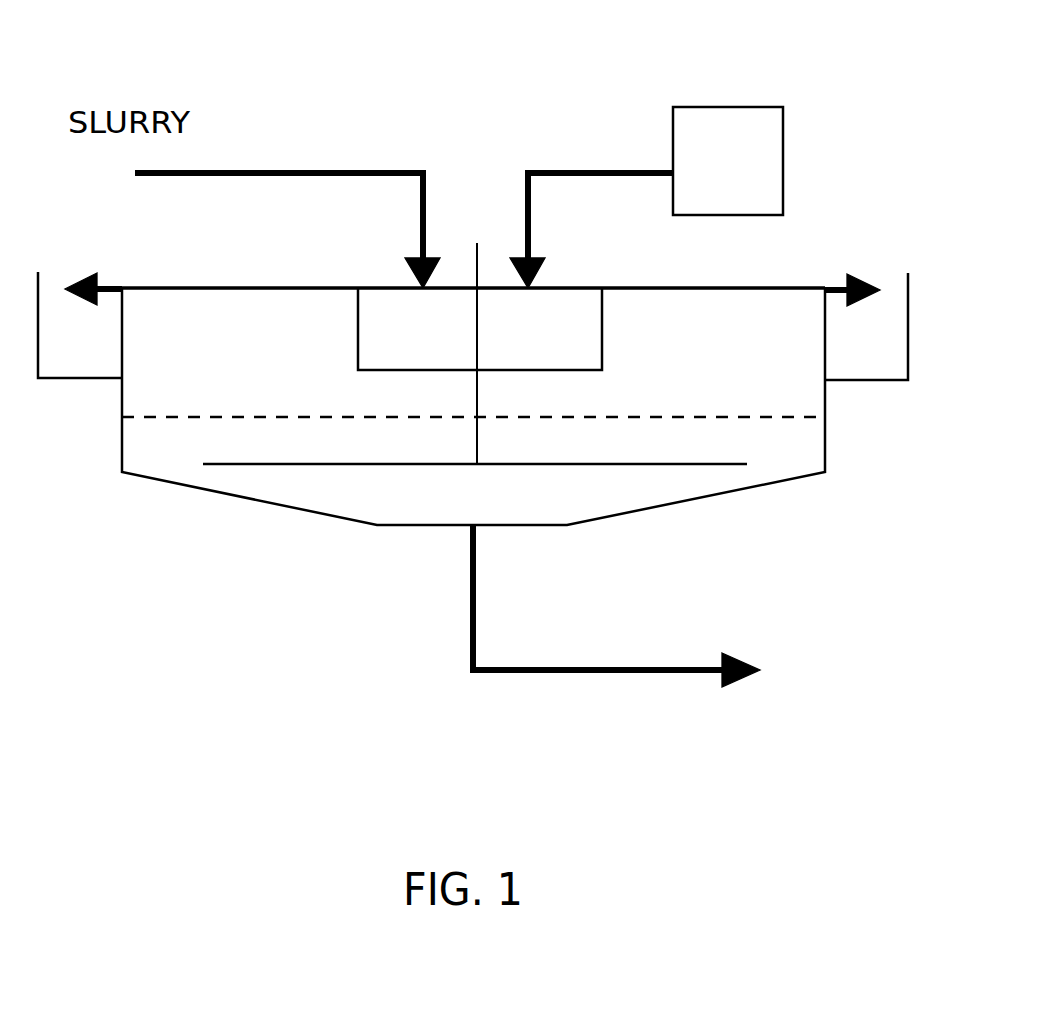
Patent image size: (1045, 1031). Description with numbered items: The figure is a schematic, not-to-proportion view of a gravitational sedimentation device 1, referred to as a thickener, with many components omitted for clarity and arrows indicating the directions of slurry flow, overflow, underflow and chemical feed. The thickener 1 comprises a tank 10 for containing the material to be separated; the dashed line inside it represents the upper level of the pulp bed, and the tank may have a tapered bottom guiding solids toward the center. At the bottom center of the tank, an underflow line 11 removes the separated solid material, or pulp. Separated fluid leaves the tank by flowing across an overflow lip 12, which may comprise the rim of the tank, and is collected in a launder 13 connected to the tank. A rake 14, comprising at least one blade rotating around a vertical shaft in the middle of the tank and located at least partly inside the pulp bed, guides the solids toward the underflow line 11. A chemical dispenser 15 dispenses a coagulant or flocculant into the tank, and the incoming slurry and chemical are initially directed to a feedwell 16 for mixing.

The gravitational sedimentation device 1 is at (218, 565).
The tank 10 is at (757, 482).
The underflow line 11 is at (470, 593).
The overflow lip 12 is at (123, 293).
The launder 13 is at (72, 378).
The rake 14 is at (657, 463).
The chemical dispenser 15 is at (727, 107).
The feedwell 16 is at (358, 323).